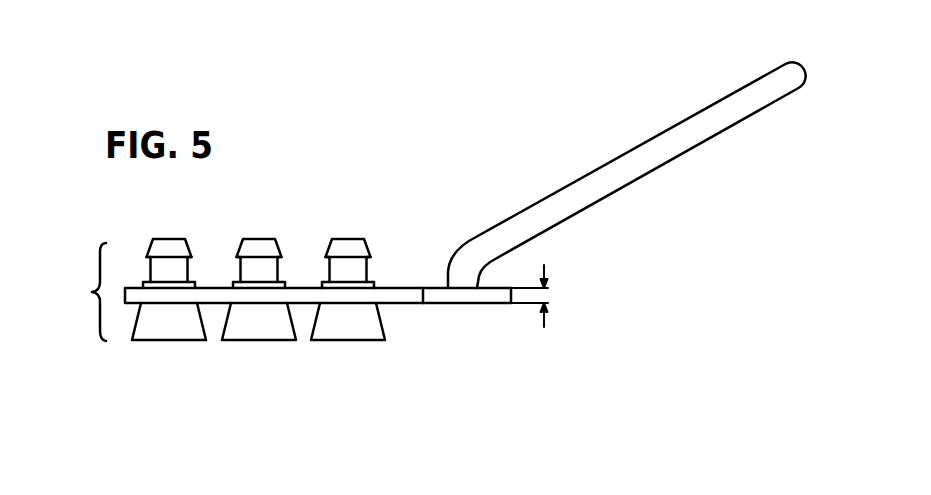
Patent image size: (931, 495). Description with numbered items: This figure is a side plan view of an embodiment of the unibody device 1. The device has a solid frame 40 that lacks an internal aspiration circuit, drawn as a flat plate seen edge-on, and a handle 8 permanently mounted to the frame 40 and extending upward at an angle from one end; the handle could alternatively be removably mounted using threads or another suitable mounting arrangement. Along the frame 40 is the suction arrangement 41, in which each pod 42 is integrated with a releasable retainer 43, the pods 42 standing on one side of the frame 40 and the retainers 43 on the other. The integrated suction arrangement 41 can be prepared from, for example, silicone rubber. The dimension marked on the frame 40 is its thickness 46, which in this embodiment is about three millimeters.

The unibody device 1 is at (527, 363).
The handle 8 is at (807, 68).
The solid frame 40 is at (415, 287).
The suction arrangement 41 is at (92, 292).
The pod 42 is at (188, 247).
The releasable retainer 43 is at (138, 339).
The thickness 46 is at (553, 293).